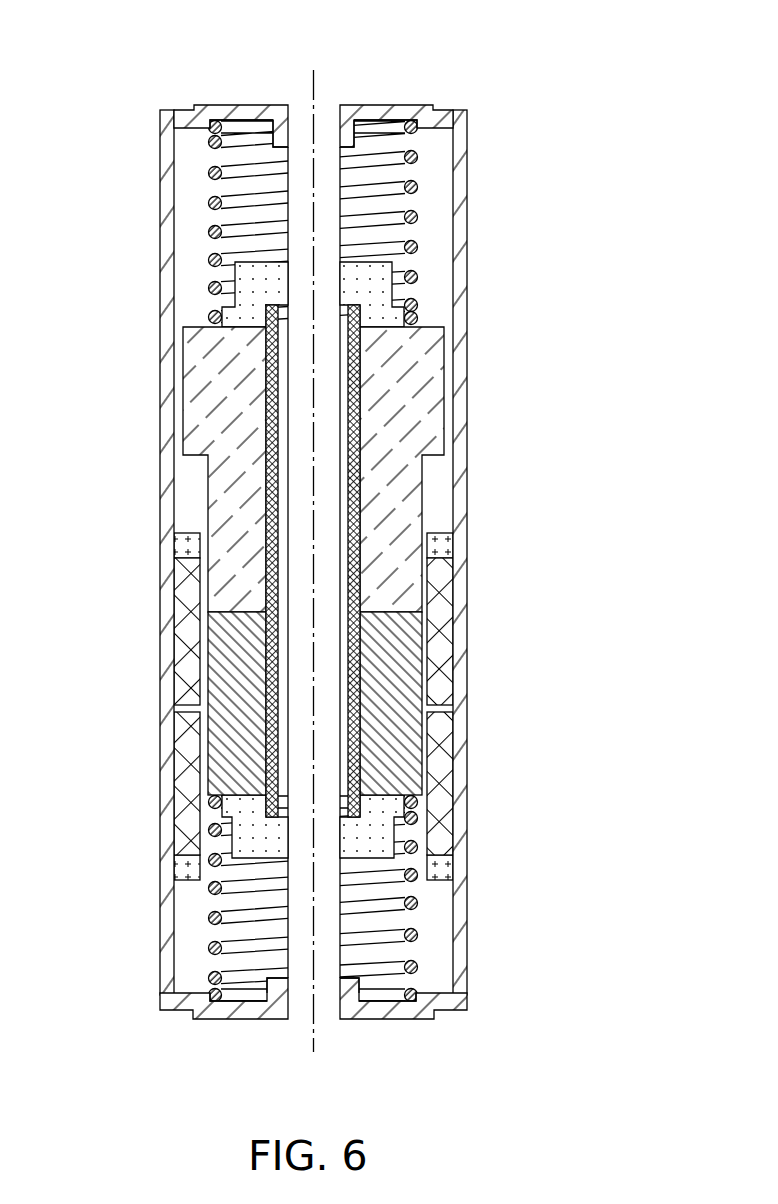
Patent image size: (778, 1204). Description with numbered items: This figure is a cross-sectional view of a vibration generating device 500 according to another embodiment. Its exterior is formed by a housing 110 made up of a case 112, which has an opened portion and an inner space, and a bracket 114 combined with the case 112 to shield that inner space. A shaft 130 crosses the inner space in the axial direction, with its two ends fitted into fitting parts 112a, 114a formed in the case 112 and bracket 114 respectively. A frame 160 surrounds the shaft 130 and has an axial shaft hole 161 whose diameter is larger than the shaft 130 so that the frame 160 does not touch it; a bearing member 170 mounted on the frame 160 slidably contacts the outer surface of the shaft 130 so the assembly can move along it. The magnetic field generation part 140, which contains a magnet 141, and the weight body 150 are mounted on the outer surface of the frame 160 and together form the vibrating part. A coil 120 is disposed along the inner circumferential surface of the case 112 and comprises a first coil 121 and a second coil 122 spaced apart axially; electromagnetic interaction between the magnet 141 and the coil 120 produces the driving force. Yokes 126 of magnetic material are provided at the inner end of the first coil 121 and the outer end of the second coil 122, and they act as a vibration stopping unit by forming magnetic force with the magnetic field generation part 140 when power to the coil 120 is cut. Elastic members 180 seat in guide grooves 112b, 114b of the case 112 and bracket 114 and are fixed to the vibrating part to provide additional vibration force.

The vibration generating device 500 is at (102, 92).
The housing 110 is at (386, 565).
The case 112 is at (347, 516).
The fitting part 112a is at (330, 125).
The guide groove 112b is at (417, 112).
The bracket 114 is at (347, 1035).
The fitting part 114a is at (342, 995).
The guide groove 114b is at (413, 1003).
The coil 120 is at (402, 706).
The first coil 121 is at (447, 678).
The second coil 122 is at (365, 783).
The yoke 126 is at (447, 545).
The shaft 130 is at (332, 168).
The magnetic field generation part 140 is at (410, 703).
The magnet 141 is at (405, 632).
The weight body 150 is at (423, 438).
The frame 160 is at (412, 561).
The shaft hole 161 is at (361, 393).
The bearing member 170 is at (380, 283).
The elastic member 180 is at (414, 241).